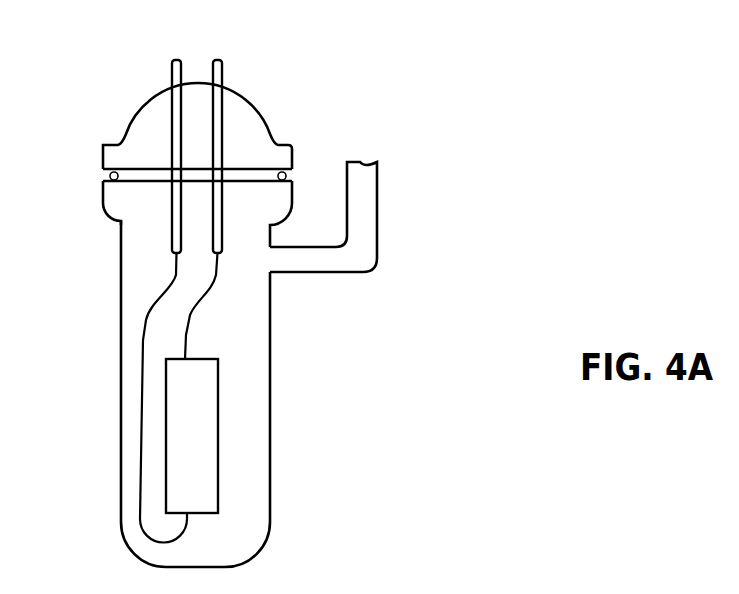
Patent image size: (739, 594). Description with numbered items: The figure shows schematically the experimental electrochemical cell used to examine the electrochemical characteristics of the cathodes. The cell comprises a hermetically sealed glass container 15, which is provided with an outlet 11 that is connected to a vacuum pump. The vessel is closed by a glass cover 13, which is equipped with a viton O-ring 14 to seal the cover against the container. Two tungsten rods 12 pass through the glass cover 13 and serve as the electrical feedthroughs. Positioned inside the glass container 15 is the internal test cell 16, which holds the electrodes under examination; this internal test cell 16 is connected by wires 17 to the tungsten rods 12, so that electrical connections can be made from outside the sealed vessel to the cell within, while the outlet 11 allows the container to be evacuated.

The outlet 11 is at (358, 185).
The tungsten rods 12 is at (177, 73).
The glass cover 13 is at (155, 138).
The viton O-ring 14 is at (110, 175).
The hermetically sealed glass container 15 is at (150, 294).
The internal test cell 16 is at (182, 471).
The wires 17 is at (147, 335).